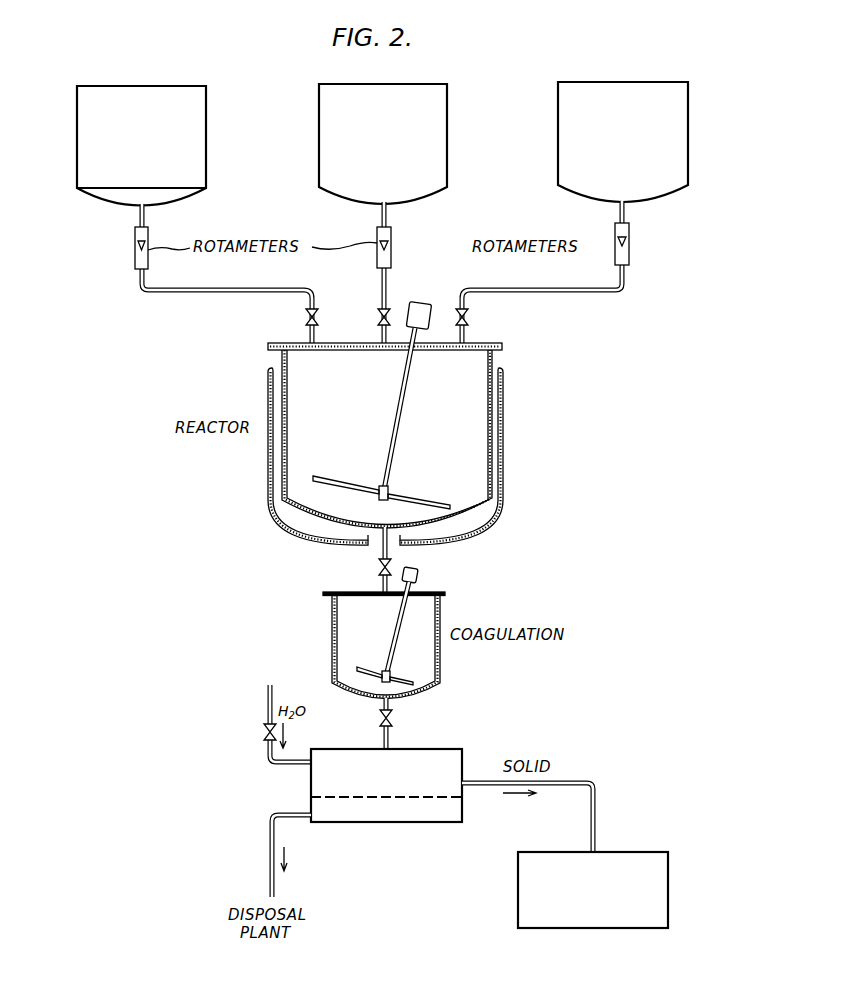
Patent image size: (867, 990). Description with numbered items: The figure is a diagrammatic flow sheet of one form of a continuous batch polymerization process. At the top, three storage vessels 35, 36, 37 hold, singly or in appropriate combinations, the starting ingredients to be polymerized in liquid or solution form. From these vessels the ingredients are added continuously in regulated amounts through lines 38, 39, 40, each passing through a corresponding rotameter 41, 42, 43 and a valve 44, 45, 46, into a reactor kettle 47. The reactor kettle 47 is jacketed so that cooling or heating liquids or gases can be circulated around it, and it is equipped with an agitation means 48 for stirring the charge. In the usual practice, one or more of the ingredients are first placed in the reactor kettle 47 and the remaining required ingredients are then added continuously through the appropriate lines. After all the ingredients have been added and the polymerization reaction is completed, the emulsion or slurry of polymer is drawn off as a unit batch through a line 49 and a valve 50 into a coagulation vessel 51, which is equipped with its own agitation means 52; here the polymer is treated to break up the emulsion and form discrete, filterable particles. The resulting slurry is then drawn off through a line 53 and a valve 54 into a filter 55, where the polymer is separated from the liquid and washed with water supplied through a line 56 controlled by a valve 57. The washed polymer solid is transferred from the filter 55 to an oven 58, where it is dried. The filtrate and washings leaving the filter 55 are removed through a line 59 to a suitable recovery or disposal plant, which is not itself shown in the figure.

The storage vessel 35 is at (77, 137).
The storage vessel 36 is at (319, 130).
The storage vessel 37 is at (558, 128).
The line 38 is at (140, 214).
The line 39 is at (388, 216).
The line 40 is at (625, 214).
The rotameter 41 is at (135, 258).
The rotameter 42 is at (391, 260).
The rotameter 43 is at (630, 259).
The valve 44 is at (308, 320).
The valve 45 is at (380, 318).
The valve 46 is at (468, 318).
The reactor kettle 47 is at (268, 373).
The agitation means 48 is at (405, 410).
The line 49 is at (381, 549).
The valve 50 is at (381, 571).
The coagulation vessel 51 is at (332, 630).
The agitation means 52 is at (396, 628).
The line 53 is at (390, 703).
The valve 54 is at (392, 722).
The filter 55 is at (311, 782).
The line 56 is at (268, 695).
The valve 57 is at (264, 733).
The oven 58 is at (660, 860).
The line 59 is at (270, 852).